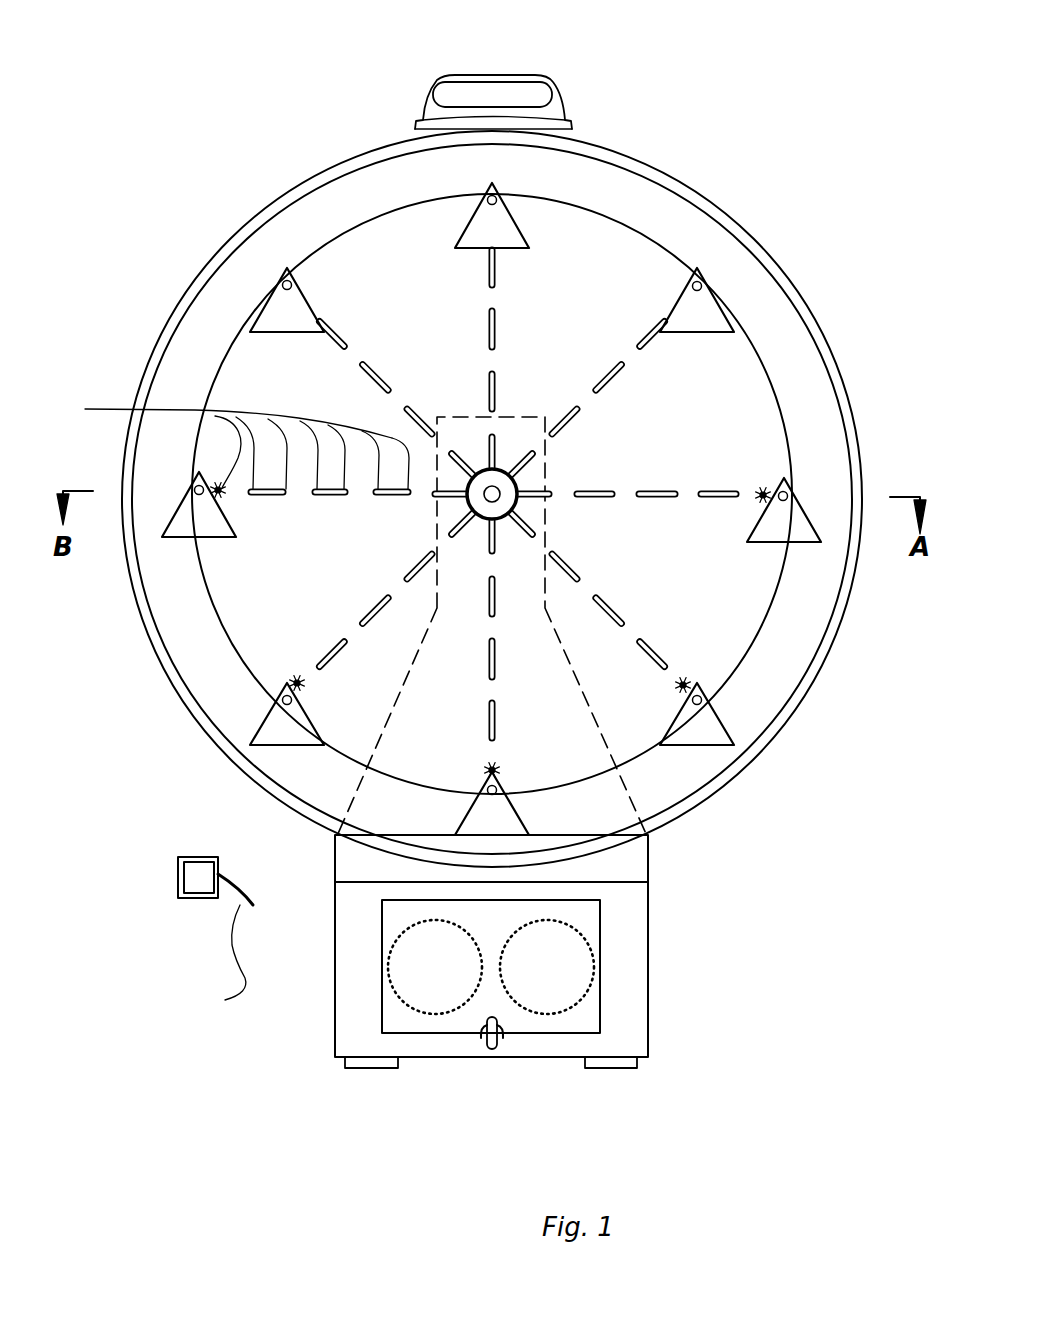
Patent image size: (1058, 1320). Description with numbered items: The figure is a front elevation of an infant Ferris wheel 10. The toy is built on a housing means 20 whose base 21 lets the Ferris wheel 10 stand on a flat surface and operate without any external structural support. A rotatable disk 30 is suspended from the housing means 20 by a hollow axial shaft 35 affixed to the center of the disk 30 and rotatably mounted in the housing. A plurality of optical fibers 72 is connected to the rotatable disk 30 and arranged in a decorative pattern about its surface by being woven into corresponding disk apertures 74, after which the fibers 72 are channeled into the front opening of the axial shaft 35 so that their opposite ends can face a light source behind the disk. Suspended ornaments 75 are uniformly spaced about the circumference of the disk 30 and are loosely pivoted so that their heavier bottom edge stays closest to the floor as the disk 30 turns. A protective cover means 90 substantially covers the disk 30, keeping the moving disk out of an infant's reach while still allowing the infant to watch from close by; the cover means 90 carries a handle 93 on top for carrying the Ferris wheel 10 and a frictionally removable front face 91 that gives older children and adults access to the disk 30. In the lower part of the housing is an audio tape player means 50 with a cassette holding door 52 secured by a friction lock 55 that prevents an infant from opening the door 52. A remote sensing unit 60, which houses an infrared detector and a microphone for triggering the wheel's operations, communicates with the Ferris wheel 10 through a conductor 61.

The infant Ferris wheel 10 is at (833, 59).
The housing means 20 is at (776, 606).
The base 21 is at (447, 1063).
The rotatable disk 30 is at (762, 357).
The hollow axial shaft 35 is at (503, 463).
The audio tape player means 50 is at (582, 913).
The cassette holding door 52 is at (578, 983).
The friction lock 55 is at (500, 1034).
The remote sensing unit 60 is at (195, 857).
The conductor 61 is at (225, 958).
The optical fibers 72 is at (492, 330).
The disk apertures 74 is at (227, 442).
The suspended ornaments 75 is at (705, 310).
The protective cover means 90 is at (633, 146).
The frictionally removable front face 91 is at (300, 226).
The handle 93 is at (553, 104).